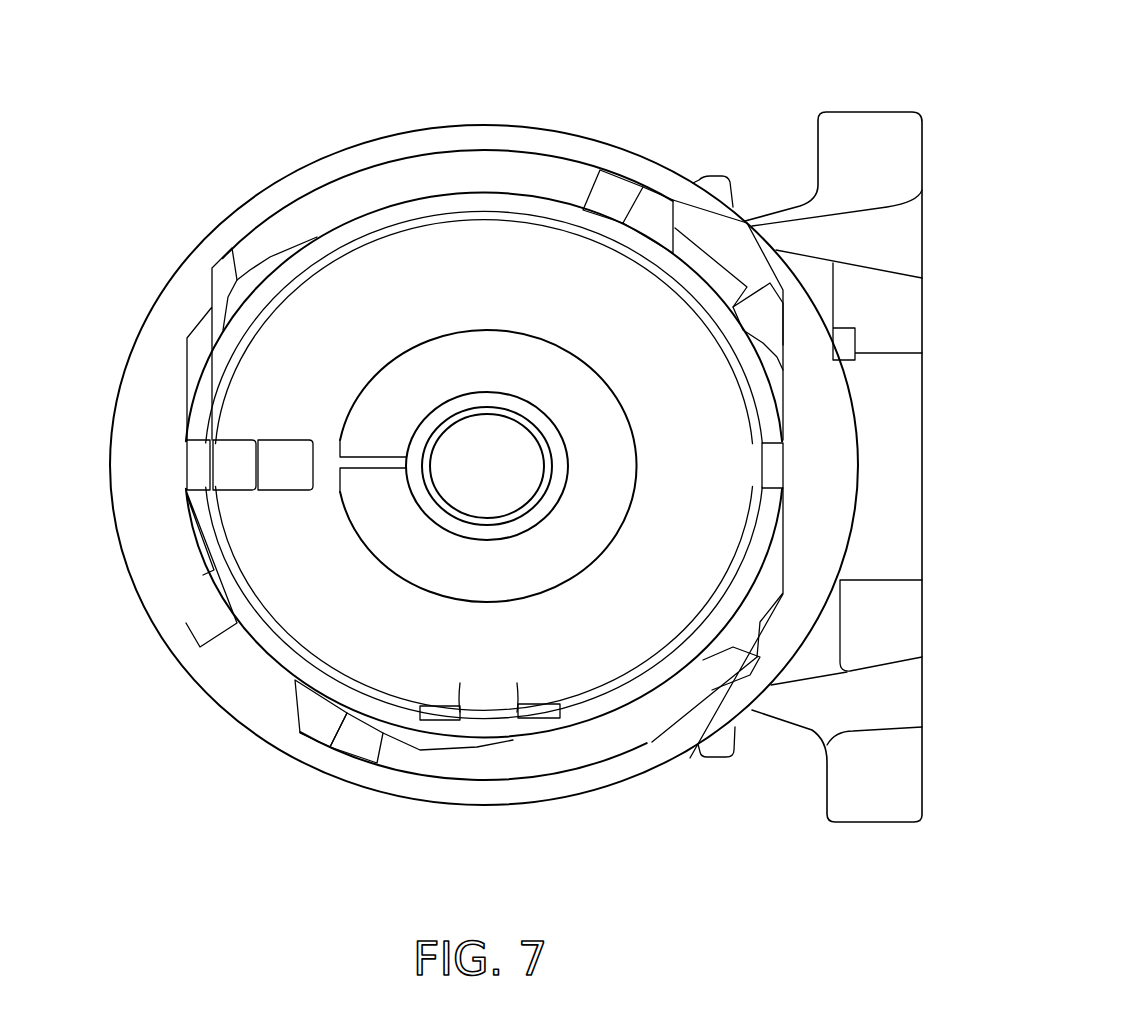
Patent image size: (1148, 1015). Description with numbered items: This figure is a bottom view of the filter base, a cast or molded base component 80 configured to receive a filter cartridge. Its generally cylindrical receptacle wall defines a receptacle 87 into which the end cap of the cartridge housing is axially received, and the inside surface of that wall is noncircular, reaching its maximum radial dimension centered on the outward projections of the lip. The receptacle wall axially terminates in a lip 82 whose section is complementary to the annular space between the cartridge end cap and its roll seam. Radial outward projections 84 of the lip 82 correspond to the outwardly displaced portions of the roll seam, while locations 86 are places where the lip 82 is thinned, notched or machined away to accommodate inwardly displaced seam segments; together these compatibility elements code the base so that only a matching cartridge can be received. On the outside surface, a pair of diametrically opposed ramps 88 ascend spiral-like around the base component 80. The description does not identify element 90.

The base component 80 is at (585, 62).
The lip 82 is at (382, 217).
The radial outward projections 84 is at (254, 295).
The locations 86 is at (557, 195).
The receptacle 87 is at (640, 613).
The ramps 88 is at (560, 430).
The mounting bracket 90 is at (858, 128).